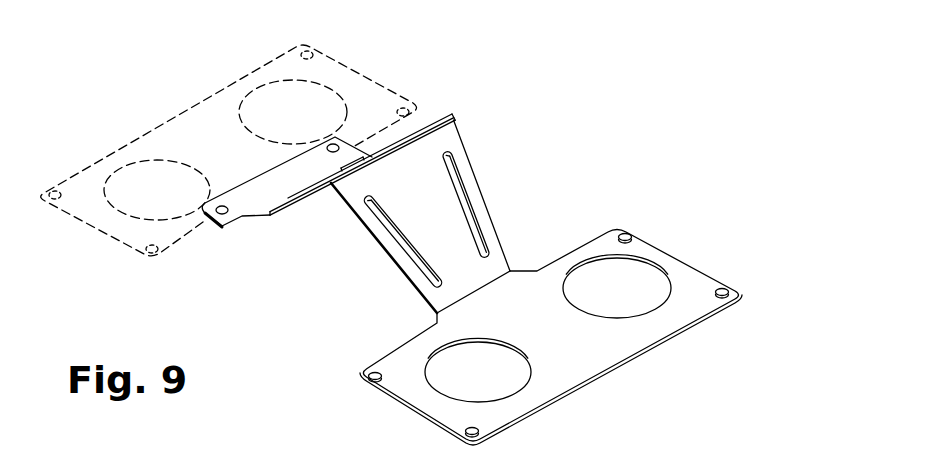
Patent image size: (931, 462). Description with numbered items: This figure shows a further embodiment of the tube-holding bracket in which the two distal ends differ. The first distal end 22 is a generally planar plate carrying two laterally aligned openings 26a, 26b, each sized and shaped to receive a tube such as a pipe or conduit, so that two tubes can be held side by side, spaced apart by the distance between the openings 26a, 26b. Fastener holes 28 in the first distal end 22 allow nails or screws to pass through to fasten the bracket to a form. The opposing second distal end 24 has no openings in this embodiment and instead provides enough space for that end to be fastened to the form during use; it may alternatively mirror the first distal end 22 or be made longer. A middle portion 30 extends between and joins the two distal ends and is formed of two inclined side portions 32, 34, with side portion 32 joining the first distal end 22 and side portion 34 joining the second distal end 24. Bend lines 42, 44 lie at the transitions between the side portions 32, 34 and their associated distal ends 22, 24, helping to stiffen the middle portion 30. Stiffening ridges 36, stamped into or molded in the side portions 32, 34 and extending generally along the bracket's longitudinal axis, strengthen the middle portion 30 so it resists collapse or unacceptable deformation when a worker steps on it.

The first distal end 22 is at (518, 232).
The second distal end 24 is at (277, 183).
The first opening 26a is at (473, 373).
The second opening 26b is at (620, 300).
The fastener holes 28 is at (340, 143).
The middle portion 30 is at (449, 108).
The first side portion 32 is at (445, 203).
The second side portion 34 is at (297, 205).
The stiffening ridges 36 is at (402, 243).
The bend line 42 is at (485, 285).
The bend line 44 is at (270, 215).